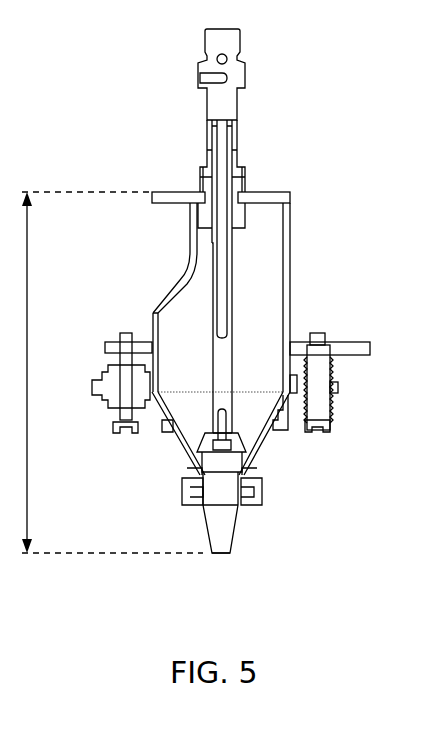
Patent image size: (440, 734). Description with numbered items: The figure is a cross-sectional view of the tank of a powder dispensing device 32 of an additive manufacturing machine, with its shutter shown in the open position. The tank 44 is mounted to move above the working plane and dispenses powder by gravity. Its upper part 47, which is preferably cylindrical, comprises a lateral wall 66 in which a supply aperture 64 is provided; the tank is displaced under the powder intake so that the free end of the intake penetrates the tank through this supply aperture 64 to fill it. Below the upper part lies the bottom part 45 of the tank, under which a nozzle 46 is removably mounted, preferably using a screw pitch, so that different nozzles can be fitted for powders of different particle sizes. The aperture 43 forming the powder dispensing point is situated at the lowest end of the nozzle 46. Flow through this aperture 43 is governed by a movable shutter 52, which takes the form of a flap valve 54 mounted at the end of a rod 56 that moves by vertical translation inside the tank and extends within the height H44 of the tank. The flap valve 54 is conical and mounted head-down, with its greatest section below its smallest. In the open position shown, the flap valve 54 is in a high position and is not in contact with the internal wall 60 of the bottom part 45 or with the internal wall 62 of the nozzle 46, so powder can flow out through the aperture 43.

The powder dispensing device 32 is at (306, 140).
The upper part of the tank 47 is at (290, 225).
The tank 44 is at (231, 339).
The supply aperture 64 is at (186, 272).
The lateral wall 66 is at (153, 325).
The rod 56 is at (232, 293).
The shutter 52 is at (246, 318).
The bottom part of the tank 45 is at (240, 453).
The internal wall of the bottom part of the tank 60 is at (172, 428).
The flap valve 54 is at (215, 441).
The nozzle 46 is at (246, 555).
The internal wall of the nozzle 62 is at (212, 533).
The aperture 43 is at (220, 553).
The height of the tank H44 is at (112, 372).